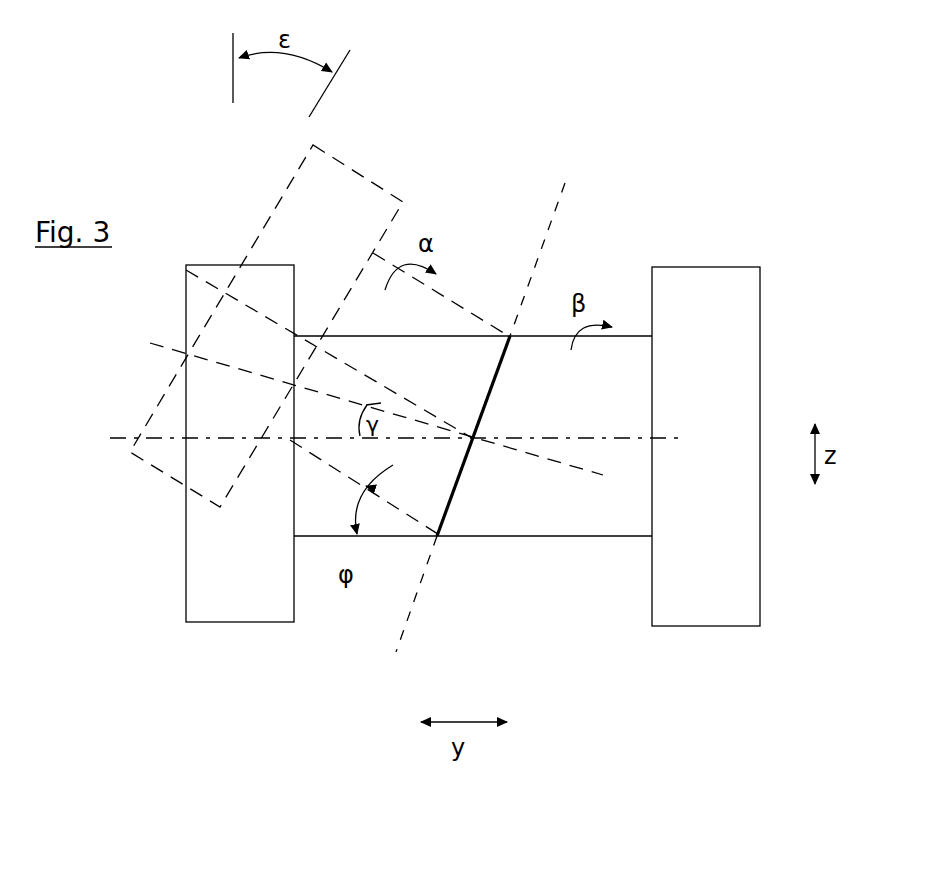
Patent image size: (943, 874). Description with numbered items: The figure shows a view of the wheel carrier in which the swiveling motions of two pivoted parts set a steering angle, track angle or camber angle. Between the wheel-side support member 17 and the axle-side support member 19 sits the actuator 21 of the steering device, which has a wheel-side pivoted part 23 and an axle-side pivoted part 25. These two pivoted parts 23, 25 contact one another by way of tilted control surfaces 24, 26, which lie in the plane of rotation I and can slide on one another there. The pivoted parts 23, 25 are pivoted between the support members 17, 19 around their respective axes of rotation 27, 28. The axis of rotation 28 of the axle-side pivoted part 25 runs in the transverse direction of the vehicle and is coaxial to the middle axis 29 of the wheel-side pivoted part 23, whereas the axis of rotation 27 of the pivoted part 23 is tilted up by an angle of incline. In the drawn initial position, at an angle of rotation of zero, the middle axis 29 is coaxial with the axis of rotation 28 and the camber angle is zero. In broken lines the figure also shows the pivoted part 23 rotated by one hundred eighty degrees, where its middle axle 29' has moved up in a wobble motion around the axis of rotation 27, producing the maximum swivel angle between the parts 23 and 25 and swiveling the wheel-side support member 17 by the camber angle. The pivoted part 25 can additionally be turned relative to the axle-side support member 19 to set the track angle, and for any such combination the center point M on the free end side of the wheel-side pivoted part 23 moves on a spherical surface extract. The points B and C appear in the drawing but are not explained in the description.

The wheel-side support member 17 is at (256, 597).
The axle-side support member 19 is at (718, 597).
The actuator 21 is at (545, 138).
The wheel-side pivoted part 23 is at (452, 304).
The control surface 24 is at (492, 333).
The axle-side pivoted part 25 is at (605, 540).
The control surface 26 is at (521, 335).
The axis of rotation 27 is at (164, 342).
The axis of rotation 28 is at (550, 437).
The middle axis 29 is at (244, 326).
The middle axle in rotated position 29' is at (317, 302).
The center point M is at (225, 296).
The point of incidence B is at (486, 482).
The center of rotation C is at (286, 443).
The plane of rotation I is at (566, 186).